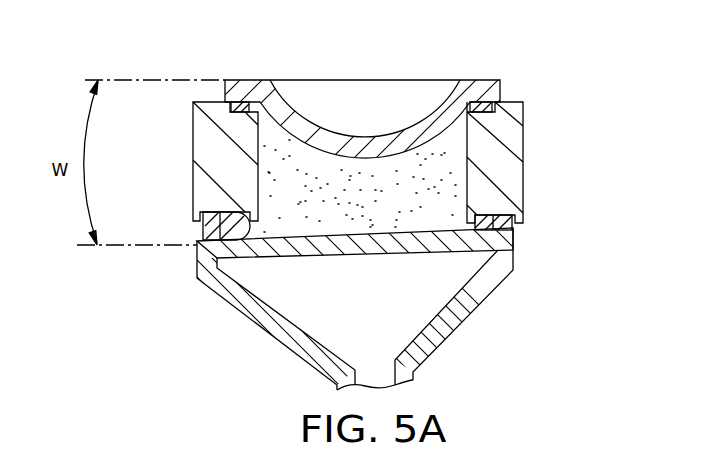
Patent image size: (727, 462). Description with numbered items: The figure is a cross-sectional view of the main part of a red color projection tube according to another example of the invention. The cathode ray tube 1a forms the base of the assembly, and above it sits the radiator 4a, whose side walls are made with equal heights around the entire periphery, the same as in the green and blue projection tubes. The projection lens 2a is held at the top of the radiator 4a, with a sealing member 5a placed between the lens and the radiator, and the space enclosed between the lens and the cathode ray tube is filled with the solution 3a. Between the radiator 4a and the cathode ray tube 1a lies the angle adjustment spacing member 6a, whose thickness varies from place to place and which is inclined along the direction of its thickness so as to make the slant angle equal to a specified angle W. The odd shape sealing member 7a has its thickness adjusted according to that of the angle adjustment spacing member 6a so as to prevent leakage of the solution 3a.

The cathode ray tube 1a is at (482, 300).
The projection lens 2a is at (487, 93).
The solution 3a is at (435, 203).
The radiator 4a is at (512, 147).
The sealing member 5a is at (238, 104).
The angle adjustment spacing member 6a is at (512, 228).
The odd shape sealing member 7a is at (490, 236).